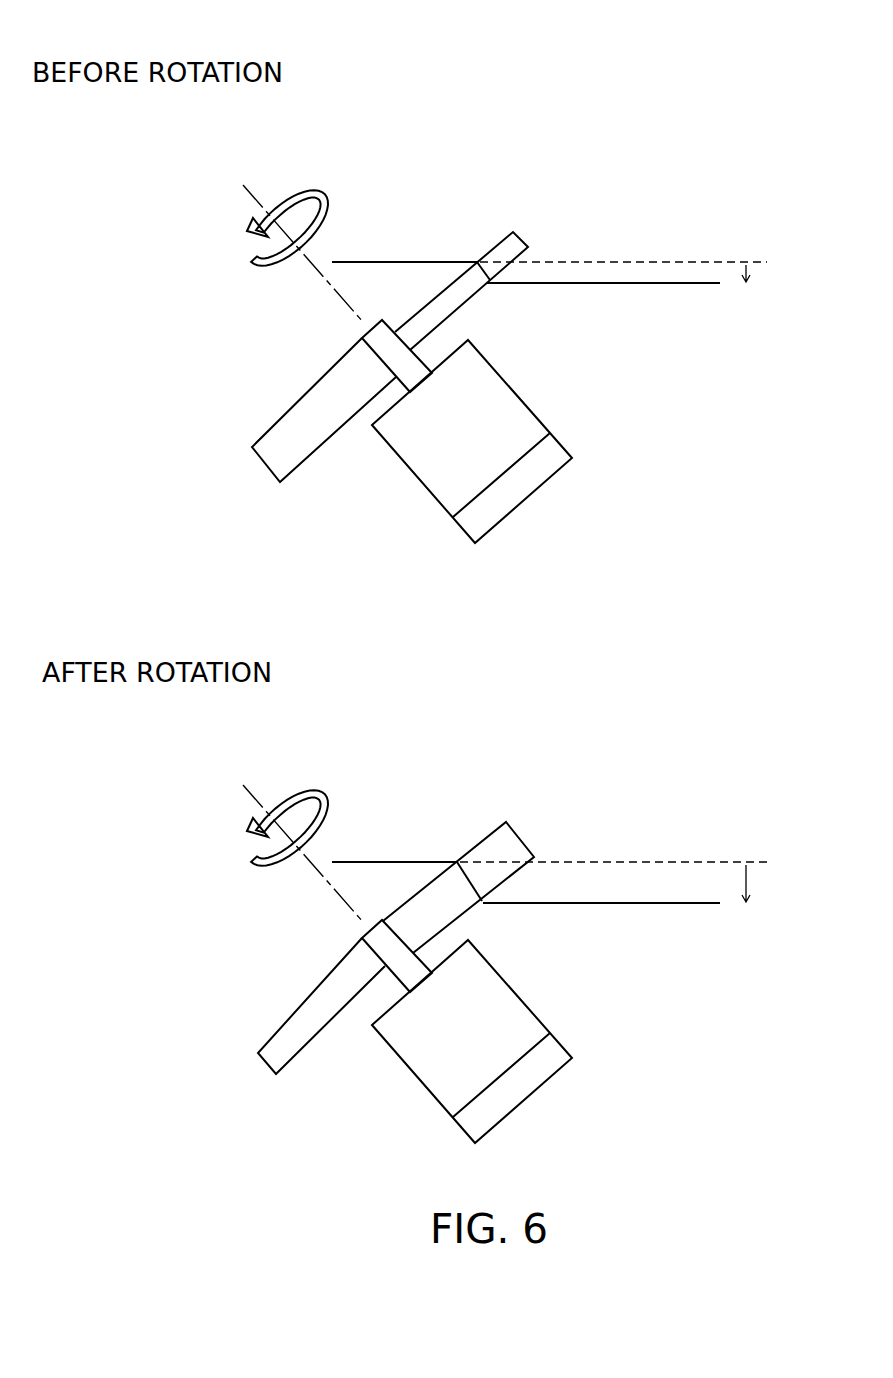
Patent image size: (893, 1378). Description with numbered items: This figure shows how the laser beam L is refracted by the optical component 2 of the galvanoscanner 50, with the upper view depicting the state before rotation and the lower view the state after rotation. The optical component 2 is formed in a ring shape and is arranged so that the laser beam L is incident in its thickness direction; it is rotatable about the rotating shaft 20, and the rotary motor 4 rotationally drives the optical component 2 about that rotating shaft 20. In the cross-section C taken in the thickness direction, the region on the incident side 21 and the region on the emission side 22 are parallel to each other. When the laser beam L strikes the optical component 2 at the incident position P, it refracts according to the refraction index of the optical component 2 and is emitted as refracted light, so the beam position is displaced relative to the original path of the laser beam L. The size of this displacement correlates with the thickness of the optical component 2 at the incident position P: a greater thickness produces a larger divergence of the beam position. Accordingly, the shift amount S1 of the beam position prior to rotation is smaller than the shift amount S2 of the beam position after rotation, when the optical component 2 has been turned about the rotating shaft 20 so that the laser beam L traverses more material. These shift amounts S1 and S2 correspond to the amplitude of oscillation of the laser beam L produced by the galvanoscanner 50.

The optical component 2 is at (318, 427).
The rotary motor 4 is at (518, 425).
The rotating shaft 20 is at (388, 355).
The incident side 21 is at (487, 250).
The emission side 22 is at (507, 270).
The galvanoscanner 50 is at (473, 128).
The incident position P is at (468, 253).
The laser beam L is at (358, 262).
The cross-section C is at (457, 298).
The shift amount prior to rotation S1 is at (626, 293).
The shift amount after rotation S2 is at (624, 903).